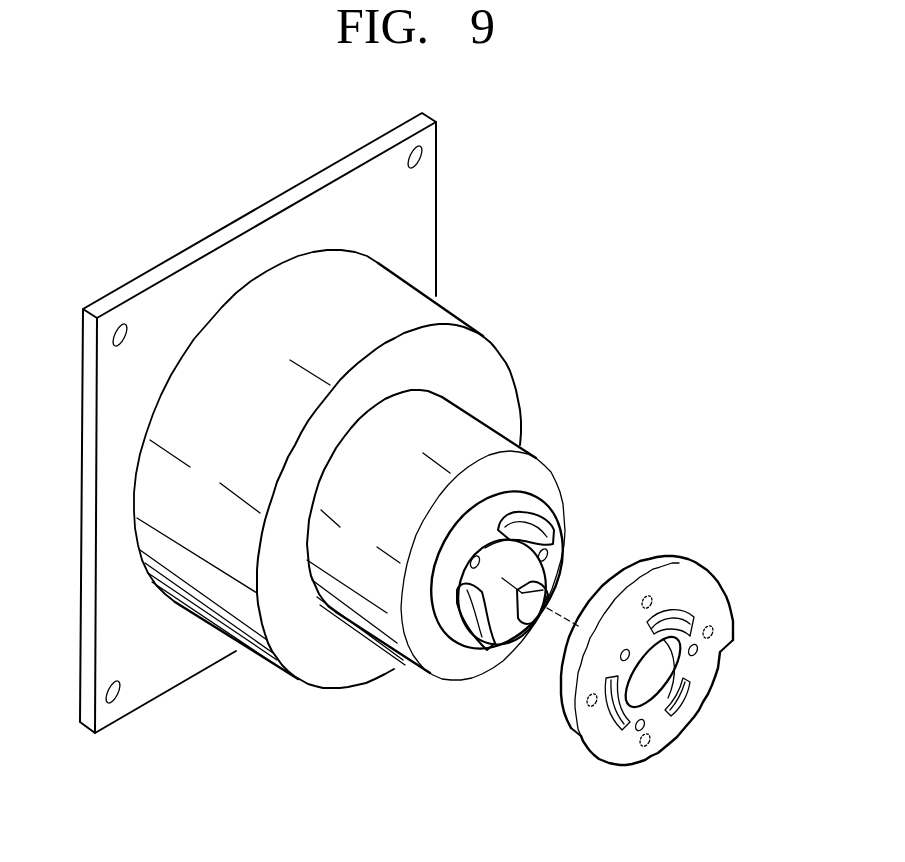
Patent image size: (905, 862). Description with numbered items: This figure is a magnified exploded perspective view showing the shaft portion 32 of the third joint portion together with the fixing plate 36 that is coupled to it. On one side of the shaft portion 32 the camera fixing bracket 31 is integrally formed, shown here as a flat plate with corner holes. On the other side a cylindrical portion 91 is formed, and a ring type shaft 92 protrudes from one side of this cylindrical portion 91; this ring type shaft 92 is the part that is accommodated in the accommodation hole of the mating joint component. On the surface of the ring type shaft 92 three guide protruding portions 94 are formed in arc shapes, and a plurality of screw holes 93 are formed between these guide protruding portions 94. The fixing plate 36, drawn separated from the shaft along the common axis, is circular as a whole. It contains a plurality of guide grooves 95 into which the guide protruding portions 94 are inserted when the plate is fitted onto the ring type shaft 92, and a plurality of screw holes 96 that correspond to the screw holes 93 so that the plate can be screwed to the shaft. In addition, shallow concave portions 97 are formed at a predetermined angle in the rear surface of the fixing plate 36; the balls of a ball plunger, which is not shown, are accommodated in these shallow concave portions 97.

The camera fixing bracket 31 is at (427, 208).
The shaft portion 32 is at (507, 241).
The fixing plate 36 is at (687, 708).
The cylindrical portion 91 is at (430, 313).
The ring type shaft 92 is at (500, 420).
The screw holes 93 is at (548, 553).
The guide protruding portions 94 is at (540, 533).
The guide grooves 95 is at (690, 620).
The screw holes 96 is at (695, 654).
The shallow concave portions 97 is at (649, 744).